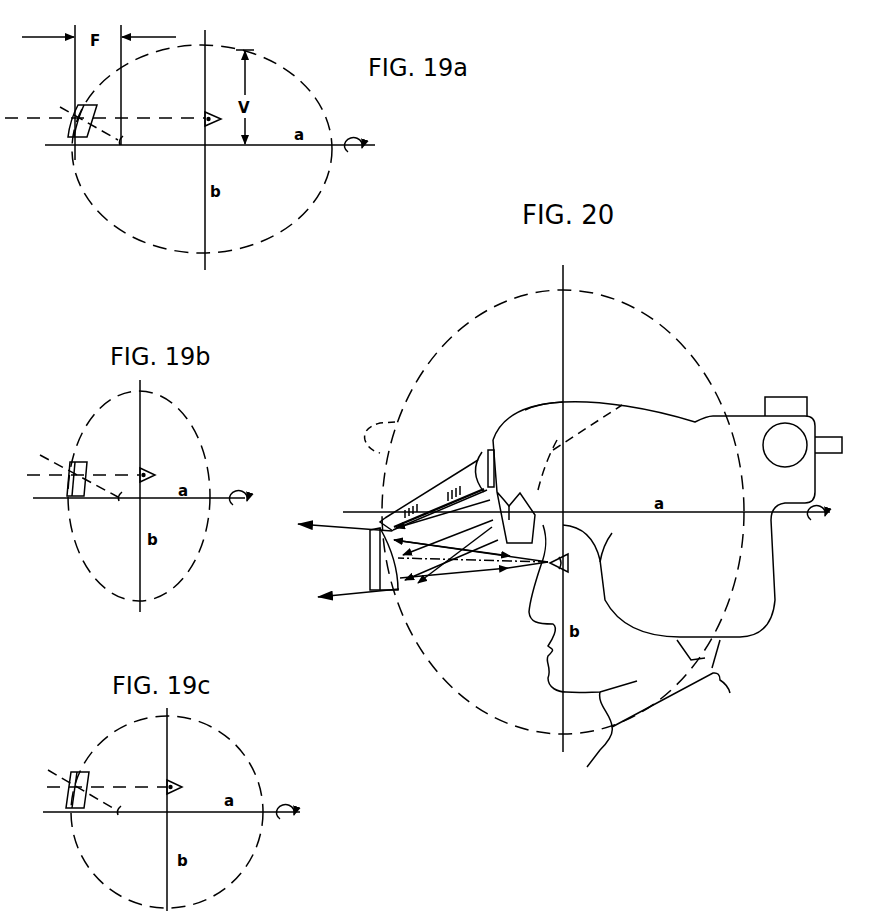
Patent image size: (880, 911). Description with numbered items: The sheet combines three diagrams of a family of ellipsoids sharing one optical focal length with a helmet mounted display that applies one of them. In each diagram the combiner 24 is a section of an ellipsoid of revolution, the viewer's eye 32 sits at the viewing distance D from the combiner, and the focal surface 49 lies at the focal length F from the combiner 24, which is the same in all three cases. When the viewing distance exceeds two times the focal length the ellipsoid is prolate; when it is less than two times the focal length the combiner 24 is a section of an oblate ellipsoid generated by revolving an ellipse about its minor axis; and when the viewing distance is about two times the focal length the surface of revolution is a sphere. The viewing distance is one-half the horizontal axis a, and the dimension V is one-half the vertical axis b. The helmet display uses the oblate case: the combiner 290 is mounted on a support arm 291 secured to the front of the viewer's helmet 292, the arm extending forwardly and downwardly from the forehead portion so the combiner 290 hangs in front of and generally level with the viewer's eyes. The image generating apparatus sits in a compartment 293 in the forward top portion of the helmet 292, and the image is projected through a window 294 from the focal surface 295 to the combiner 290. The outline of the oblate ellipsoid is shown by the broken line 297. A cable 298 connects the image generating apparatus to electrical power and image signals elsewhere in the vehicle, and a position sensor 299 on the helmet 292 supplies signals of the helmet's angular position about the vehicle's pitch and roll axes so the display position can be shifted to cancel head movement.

In FIG. 19A, the combiner 24 is at (56, 109).
In FIG. 19B, the combiner 24 is at (73, 461).
In FIG. 19C, the combiner 24 is at (71, 772).
In FIG. 19A, the viewer's eye 32 is at (204, 117).
In FIG. 19B, the viewer's eye 32 is at (144, 472).
In FIG. 19C, the viewer's eye 32 is at (170, 785).
In FIG. 19A, the focal surface 49 is at (121, 147).
In FIG. 19B, the focal surface 49 is at (120, 505).
In FIG. 19C, the focal surface 49 is at (118, 818).
In FIG. 20, the combiner 290 is at (370, 570).
In FIG. 20, the support arm 291 is at (436, 468).
In FIG. 20, the helmet 292 is at (654, 535).
In FIG. 20, the compartment 293 is at (552, 380).
In FIG. 20, the window 294 is at (480, 450).
In FIG. 20, the focal surface 295 is at (514, 491).
In FIG. 20, the broken line 297 is at (370, 450).
In FIG. 20, the cable 298 is at (840, 438).
In FIG. 20, the position sensor 299 is at (775, 396).